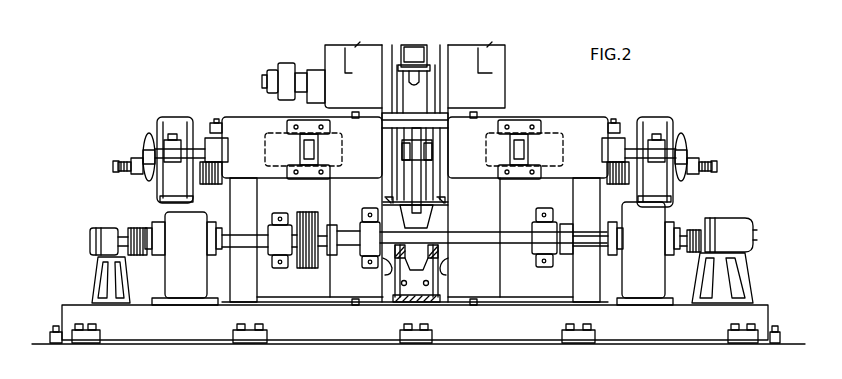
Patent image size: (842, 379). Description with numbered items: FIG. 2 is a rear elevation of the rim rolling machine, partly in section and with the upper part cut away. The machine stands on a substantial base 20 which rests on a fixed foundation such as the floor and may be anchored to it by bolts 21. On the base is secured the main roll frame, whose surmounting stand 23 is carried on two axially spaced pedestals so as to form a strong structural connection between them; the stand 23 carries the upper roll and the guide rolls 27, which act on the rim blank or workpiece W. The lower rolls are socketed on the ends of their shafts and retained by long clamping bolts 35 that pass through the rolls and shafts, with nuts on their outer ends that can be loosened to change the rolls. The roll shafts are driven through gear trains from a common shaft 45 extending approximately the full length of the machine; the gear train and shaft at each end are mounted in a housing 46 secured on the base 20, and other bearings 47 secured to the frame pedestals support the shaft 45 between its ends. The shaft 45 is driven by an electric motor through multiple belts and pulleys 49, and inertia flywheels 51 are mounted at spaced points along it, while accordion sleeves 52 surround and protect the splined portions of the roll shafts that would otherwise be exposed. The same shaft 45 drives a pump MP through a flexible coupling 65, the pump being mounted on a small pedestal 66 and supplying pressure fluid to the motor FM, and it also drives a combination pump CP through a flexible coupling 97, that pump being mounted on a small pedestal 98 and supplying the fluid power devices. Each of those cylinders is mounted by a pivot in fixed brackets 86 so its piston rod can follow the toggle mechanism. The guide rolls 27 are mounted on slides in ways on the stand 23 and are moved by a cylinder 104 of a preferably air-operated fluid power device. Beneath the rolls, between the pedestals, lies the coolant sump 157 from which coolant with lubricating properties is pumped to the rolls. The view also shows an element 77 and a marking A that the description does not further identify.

The base 20 is at (346, 337).
The bolts 21 is at (250, 331).
The stand 23 is at (492, 73).
The guide rolls 27 is at (428, 162).
The clamping bolts 35 is at (117, 174).
The common shaft 45 is at (487, 234).
The housing 46 is at (170, 214).
The bearings 47 is at (278, 256).
The pulleys 49 is at (309, 266).
The inertia flywheels 51 is at (242, 274).
The accordion sleeves 52 is at (212, 184).
The flexible coupling 65 is at (136, 255).
The small pedestal 66 is at (98, 281).
The handwheel 77 is at (144, 147).
The fixed brackets 86 is at (288, 122).
The flexible coupling 97 is at (688, 250).
The small pedestal 98 is at (733, 278).
The cylinder 104 is at (416, 46).
The sump 157 is at (426, 300).
The workpiece W is at (438, 190).
The pedestal marking A is at (186, 217).
The motor FM is at (285, 64).
The pump MP is at (114, 218).
The combination pump CP is at (742, 213).